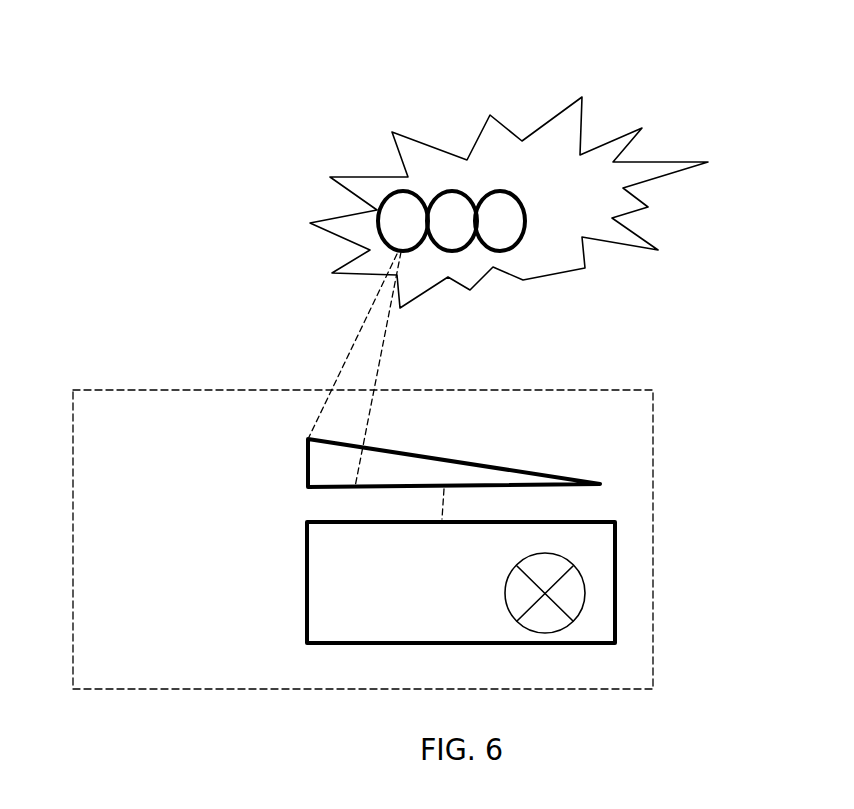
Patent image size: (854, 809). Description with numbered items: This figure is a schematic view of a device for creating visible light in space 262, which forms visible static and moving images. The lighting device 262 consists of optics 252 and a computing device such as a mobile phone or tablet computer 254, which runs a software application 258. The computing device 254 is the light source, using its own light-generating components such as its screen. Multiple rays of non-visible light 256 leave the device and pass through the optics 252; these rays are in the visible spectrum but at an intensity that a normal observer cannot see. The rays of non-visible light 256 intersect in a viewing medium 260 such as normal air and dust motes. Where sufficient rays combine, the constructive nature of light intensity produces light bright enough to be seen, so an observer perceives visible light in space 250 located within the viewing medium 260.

The visible light in space 250 is at (388, 195).
The optics 252 is at (308, 467).
The computing device 254 is at (307, 585).
The rays of non-visible light 256 is at (350, 352).
The software application 258 is at (597, 585).
The viewing medium 260 is at (483, 142).
The device for creating visible light in space 262 is at (567, 385).